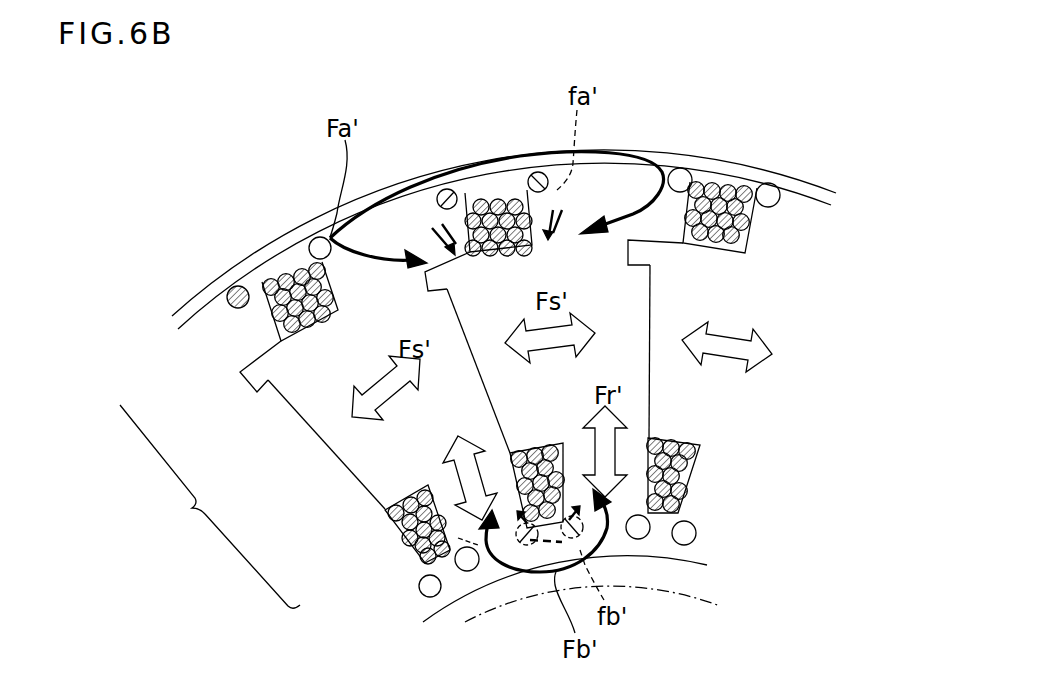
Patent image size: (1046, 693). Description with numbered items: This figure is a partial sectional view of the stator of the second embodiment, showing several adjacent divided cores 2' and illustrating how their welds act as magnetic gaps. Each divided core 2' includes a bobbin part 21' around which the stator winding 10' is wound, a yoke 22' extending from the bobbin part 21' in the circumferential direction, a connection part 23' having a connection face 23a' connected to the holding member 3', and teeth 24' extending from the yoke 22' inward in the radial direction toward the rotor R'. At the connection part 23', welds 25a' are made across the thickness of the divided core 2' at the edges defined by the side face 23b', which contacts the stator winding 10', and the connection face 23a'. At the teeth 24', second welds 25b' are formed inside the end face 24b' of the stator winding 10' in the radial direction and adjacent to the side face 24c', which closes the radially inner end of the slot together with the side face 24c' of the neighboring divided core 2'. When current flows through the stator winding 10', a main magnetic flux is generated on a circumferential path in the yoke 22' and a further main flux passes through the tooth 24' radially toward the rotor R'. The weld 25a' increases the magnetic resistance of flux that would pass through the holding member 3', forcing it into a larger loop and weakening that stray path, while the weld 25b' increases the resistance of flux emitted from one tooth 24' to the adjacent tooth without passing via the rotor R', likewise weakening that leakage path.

The divided core 2' is at (210, 506).
The holding member 3' is at (504, 207).
The stator winding 10' is at (266, 270).
The bobbin part 21' is at (319, 503).
The yoke 22' is at (425, 387).
The connection part 23' is at (252, 342).
The connection face 23a' is at (537, 141).
The side face 23b' is at (461, 316).
The teeth 24' is at (495, 582).
The end face 24b' is at (378, 623).
The side face 24c' is at (431, 649).
The weld 25a' is at (517, 172).
The second weld 25b' is at (575, 586).
The rotor R' is at (639, 581).